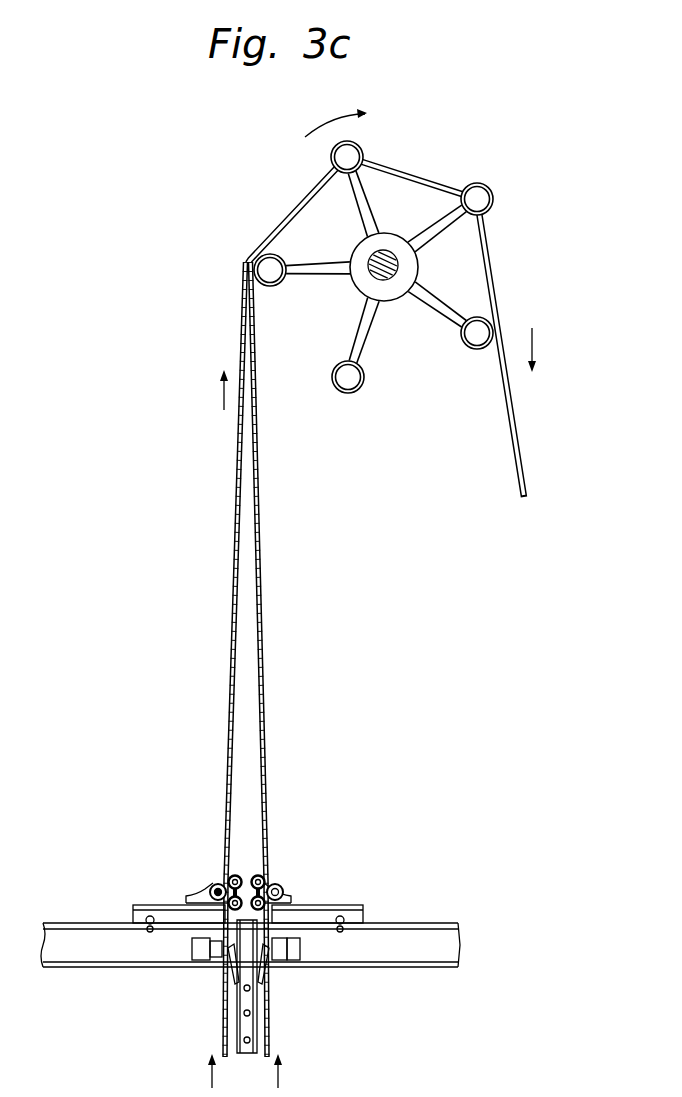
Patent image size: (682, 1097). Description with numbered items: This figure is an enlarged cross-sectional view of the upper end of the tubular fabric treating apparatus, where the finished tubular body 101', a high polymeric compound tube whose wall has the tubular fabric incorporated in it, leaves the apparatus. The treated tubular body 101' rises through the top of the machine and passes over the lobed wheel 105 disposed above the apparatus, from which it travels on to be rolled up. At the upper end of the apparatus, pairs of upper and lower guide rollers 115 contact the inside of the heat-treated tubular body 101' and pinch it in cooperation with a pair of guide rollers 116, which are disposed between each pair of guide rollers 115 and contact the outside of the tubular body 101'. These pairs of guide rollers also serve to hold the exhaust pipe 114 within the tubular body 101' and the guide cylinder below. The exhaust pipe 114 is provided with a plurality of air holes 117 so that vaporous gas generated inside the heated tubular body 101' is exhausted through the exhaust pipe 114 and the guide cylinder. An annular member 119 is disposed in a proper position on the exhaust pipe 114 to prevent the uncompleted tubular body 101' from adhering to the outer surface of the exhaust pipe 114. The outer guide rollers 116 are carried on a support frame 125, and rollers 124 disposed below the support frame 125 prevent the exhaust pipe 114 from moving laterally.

The heat-treated tubular body 101' is at (374, 609).
The lobed wheel 105 is at (413, 273).
The exhaust pipe 114 is at (250, 1028).
The guide rollers 115 is at (227, 854).
The guide rollers 116 is at (210, 882).
The air holes 117 is at (243, 1010).
The annular member 119 is at (263, 980).
The rollers 124 is at (210, 948).
The support frame 125 is at (77, 958).